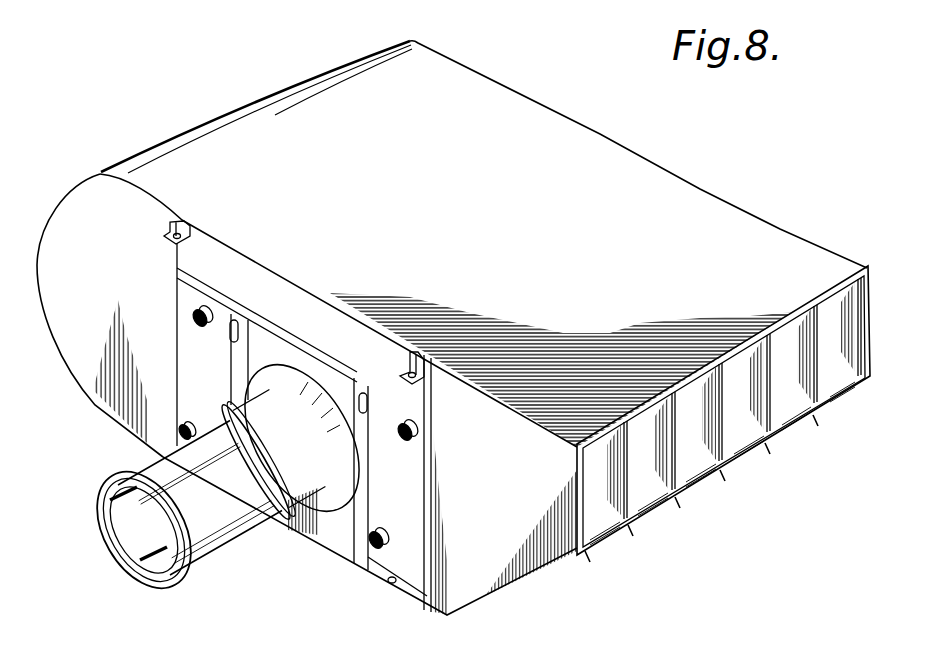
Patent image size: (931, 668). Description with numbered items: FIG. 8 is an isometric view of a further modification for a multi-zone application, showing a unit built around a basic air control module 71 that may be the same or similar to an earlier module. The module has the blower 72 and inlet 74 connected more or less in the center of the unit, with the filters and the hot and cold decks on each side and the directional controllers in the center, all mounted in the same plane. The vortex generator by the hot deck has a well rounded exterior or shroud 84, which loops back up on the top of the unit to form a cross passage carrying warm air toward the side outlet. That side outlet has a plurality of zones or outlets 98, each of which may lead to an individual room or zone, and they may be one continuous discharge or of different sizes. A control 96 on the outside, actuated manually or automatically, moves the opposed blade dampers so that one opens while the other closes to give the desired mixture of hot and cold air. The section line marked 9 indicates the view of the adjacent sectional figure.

The air control module 71 is at (622, 172).
The blower 72 is at (222, 537).
The inlet 74 is at (338, 497).
The shroud 84 is at (92, 360).
The control 96 is at (723, 473).
The zones or outlets 98 is at (612, 478).
The section line 9- 9 is at (277, 137).